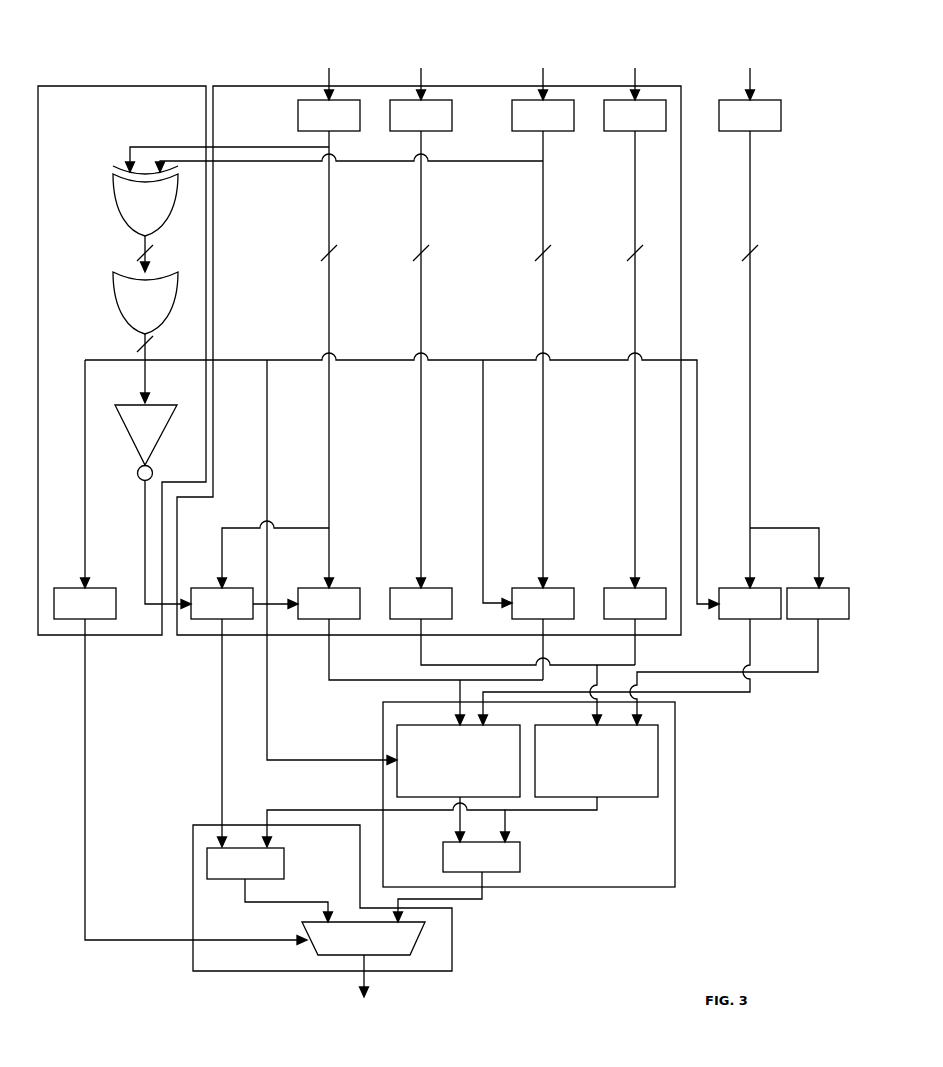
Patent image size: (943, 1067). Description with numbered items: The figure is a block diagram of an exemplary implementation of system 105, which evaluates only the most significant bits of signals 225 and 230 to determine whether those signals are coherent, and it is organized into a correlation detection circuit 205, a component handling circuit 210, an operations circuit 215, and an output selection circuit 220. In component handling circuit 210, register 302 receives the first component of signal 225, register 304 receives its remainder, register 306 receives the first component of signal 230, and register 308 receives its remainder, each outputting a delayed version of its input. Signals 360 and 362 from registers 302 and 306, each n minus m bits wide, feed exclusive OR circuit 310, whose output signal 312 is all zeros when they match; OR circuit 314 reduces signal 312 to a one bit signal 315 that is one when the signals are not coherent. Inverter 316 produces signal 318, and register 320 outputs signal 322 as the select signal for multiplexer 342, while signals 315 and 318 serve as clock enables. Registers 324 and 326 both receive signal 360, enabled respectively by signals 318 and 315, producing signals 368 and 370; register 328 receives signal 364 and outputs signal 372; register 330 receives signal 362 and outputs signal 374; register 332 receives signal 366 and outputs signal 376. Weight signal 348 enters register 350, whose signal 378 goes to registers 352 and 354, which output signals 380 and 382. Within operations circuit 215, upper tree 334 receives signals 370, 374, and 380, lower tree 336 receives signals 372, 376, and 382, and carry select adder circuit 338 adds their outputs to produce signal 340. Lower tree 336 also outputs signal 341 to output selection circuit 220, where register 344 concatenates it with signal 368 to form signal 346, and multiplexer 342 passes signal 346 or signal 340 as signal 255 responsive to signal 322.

The system 105 is at (92, 24).
The correlation detection circuit 205 is at (122, 360).
The component handling circuit 210 is at (429, 360).
The operations circuit 215 is at (529, 794).
The output selection circuit 220 is at (322, 898).
The signal 225 is at (374, 73).
The signal 230 is at (588, 73).
The weight signal 348 is at (750, 73).
The signal 255 is at (364, 990).
The register 302 is at (329, 115).
The register 304 is at (421, 115).
The register 306 is at (543, 115).
The register 308 is at (635, 115).
The register 350 is at (750, 115).
The exclusive OR circuit 310 is at (145, 201).
The output signal 312 is at (140, 244).
The OR circuit 314 is at (145, 303).
The output signal 315 is at (105, 360).
The inverter 316 is at (146, 443).
The signal 318 is at (144, 550).
The register 320 is at (85, 603).
The signal 322 is at (84, 774).
The register 324 is at (244, 603).
The register 326 is at (329, 603).
The register 328 is at (421, 603).
The register 330 is at (543, 603).
The register 332 is at (635, 603).
The register 352 is at (750, 603).
The register 354 is at (818, 603).
The upper tree 334 is at (458, 783).
The lower tree 336 is at (580, 783).
The carry select adder circuit 338 is at (481, 857).
The signal 340 is at (484, 900).
The signal 341 is at (352, 810).
The multiplexer 342 is at (363, 938).
The register 344 is at (245, 863).
The signal 346 is at (252, 903).
The signal 360 is at (328, 312).
The signal 362 is at (542, 312).
The signal 364 is at (420, 312).
The signal 366 is at (634, 312).
The signal 368 is at (221, 739).
The signal 370 is at (328, 676).
The signal 372 is at (420, 664).
The signal 374 is at (542, 660).
The signal 376 is at (634, 664).
The signal 378 is at (749, 312).
The signal 380 is at (749, 656).
The signal 382 is at (817, 656).